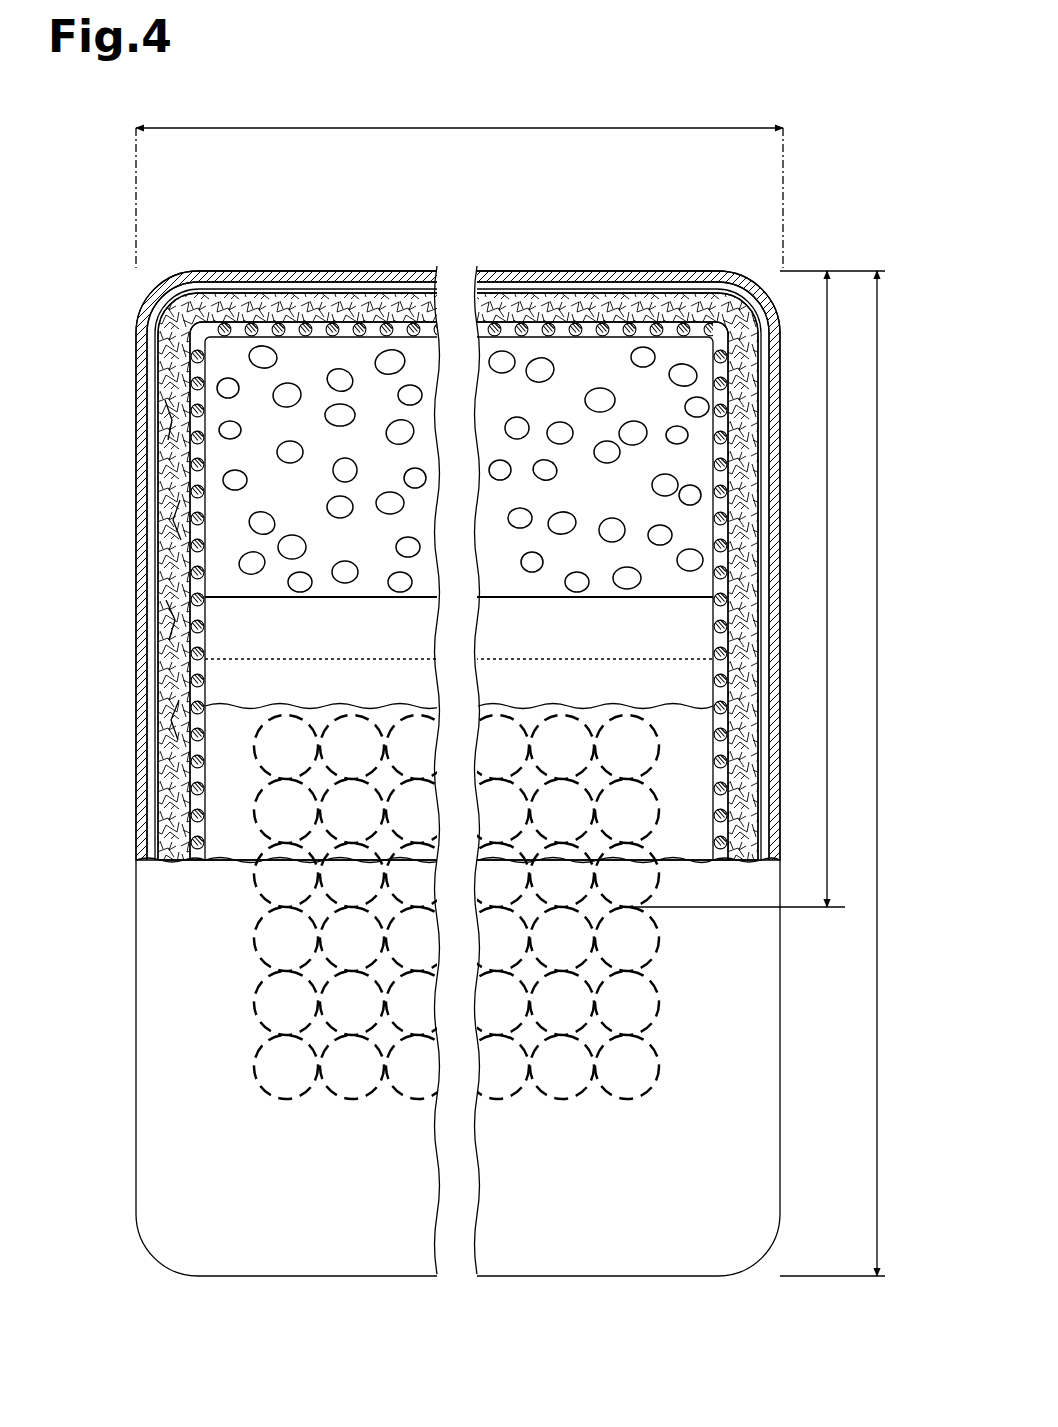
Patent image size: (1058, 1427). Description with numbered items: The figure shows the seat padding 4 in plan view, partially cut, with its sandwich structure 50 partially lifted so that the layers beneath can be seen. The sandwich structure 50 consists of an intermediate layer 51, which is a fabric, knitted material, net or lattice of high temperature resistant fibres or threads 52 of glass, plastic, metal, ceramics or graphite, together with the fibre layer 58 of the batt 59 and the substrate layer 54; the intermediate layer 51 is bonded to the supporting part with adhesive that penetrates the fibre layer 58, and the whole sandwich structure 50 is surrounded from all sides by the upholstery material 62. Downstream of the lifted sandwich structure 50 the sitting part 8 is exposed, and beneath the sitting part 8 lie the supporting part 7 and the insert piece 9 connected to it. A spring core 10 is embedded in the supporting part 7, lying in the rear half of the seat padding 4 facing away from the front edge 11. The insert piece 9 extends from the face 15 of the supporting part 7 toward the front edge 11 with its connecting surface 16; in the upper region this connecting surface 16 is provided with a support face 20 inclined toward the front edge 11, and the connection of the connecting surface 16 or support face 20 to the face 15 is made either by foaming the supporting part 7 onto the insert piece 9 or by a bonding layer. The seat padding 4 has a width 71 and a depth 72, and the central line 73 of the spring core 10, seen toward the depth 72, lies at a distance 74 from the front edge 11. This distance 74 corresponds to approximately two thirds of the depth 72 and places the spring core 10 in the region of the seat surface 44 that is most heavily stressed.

The seat padding 4 is at (838, 156).
The supporting part 7 is at (297, 611).
The sitting part 8 is at (243, 782).
The insert piece 9 is at (578, 376).
The spring core 10 is at (270, 1104).
The front edge 11 is at (481, 300).
The face 15 is at (552, 658).
The connecting surface 16 is at (272, 660).
The support face 20 is at (297, 638).
The seat surface 44 is at (357, 937).
The sandwich structure 50 is at (185, 850).
The intermediate layer 51 is at (371, 317).
The fibres or threads 52 is at (628, 327).
The substrate layer 54 is at (155, 405).
The fibre layer 58 is at (178, 320).
The batt 59 is at (234, 309).
The upholstery material 62 is at (345, 272).
The width 71 is at (604, 118).
The depth 72 is at (883, 760).
The central line 73 is at (762, 912).
The distance 74 is at (832, 589).